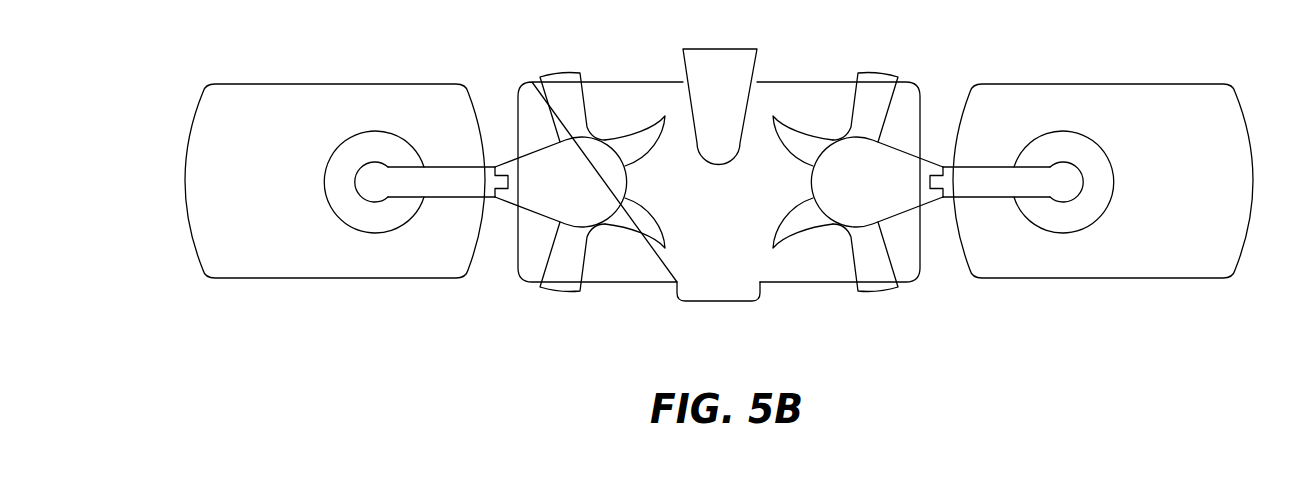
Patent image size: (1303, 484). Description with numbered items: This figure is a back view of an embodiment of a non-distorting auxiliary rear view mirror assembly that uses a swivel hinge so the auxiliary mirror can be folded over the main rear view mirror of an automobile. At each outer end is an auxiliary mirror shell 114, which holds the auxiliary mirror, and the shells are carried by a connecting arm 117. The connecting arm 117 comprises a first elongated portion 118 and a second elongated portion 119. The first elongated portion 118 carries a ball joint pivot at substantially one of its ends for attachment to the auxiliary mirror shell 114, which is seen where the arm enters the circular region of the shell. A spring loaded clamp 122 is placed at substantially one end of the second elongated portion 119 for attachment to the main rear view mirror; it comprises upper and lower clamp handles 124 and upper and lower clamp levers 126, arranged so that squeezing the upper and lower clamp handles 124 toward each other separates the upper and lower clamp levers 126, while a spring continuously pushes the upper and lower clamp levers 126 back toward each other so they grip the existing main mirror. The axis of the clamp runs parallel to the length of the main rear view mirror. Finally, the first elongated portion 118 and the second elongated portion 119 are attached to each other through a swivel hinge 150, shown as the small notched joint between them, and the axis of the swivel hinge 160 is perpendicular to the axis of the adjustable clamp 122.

The auxiliary mirror shell 114 is at (247, 104).
The connecting arm 117 is at (1076, 246).
The first elongated portion 118 is at (439, 216).
The second elongated portion 119 is at (534, 241).
The spring loaded clamp 122 is at (607, 254).
The upper and lower clamp handles 124 is at (864, 53).
The upper and lower clamp levers 126 is at (797, 256).
The swivel hinge 150 is at (941, 147).
The axis of the swivel hinge 160 is at (494, 228).